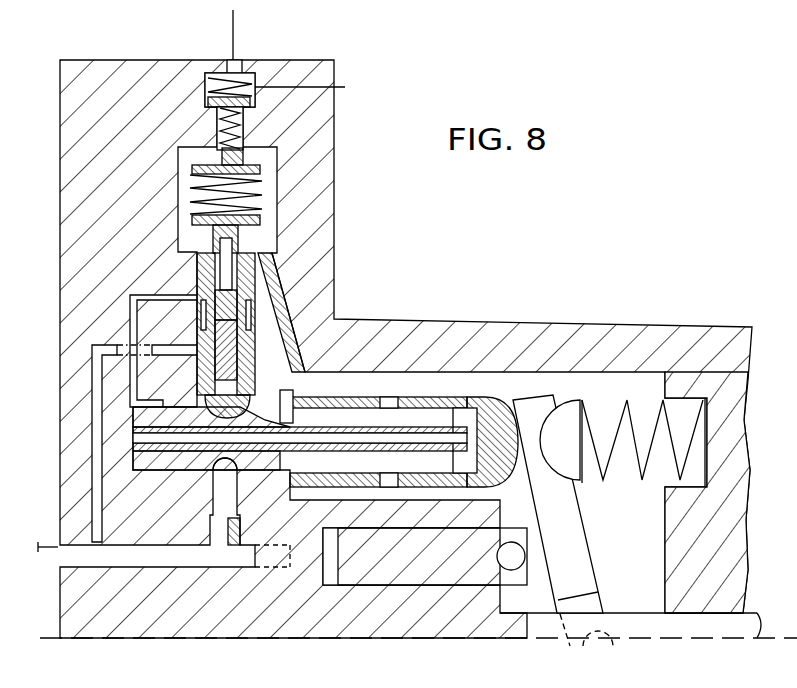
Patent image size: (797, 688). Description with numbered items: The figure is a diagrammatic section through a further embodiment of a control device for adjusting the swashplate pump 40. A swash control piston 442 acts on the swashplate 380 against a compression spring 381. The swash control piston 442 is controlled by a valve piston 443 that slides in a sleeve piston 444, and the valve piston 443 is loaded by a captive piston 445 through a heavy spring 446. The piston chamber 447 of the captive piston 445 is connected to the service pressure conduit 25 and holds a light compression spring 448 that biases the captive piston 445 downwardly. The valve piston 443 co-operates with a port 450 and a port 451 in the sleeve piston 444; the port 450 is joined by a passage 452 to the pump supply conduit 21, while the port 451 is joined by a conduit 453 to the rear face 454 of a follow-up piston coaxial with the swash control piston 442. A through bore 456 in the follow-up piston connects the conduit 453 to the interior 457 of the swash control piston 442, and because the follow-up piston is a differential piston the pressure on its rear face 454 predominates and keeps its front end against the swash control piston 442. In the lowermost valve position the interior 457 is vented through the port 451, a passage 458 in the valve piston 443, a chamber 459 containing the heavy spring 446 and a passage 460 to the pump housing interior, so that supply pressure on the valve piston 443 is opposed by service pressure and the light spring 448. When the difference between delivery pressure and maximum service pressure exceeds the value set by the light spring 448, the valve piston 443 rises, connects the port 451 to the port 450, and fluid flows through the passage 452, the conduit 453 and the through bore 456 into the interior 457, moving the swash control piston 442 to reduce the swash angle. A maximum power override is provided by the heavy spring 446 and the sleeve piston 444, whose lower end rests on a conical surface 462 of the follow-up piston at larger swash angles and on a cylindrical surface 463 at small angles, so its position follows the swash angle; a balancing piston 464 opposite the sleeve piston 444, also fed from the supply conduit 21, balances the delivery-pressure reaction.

The pump supply conduit 21 is at (415, 590).
The service pressure conduit 25 is at (233, 24).
The swashplate pump 40 is at (510, 367).
The swashplate 380 is at (585, 529).
The compression spring 381 is at (632, 400).
The swash control piston 442 is at (90, 400).
The valve piston 443 is at (190, 220).
The sleeve piston 444 is at (203, 258).
The captive piston 445 is at (217, 115).
The heavy spring 446 is at (190, 172).
The piston chamber 447 is at (334, 93).
The light compression spring 448 is at (207, 90).
The port 450 is at (212, 337).
The port 451 is at (212, 318).
The passage 452 is at (92, 520).
The conduit 453 is at (130, 297).
The rear face 454 is at (133, 442).
The through bore 456 is at (165, 490).
The interior 457 is at (463, 420).
The passage 458 is at (213, 247).
The chamber 459 is at (190, 196).
The passage 460 is at (322, 292).
The conical surface 462 is at (240, 472).
The cylindrical surface 463 is at (212, 468).
The balancing piston 464 is at (222, 510).